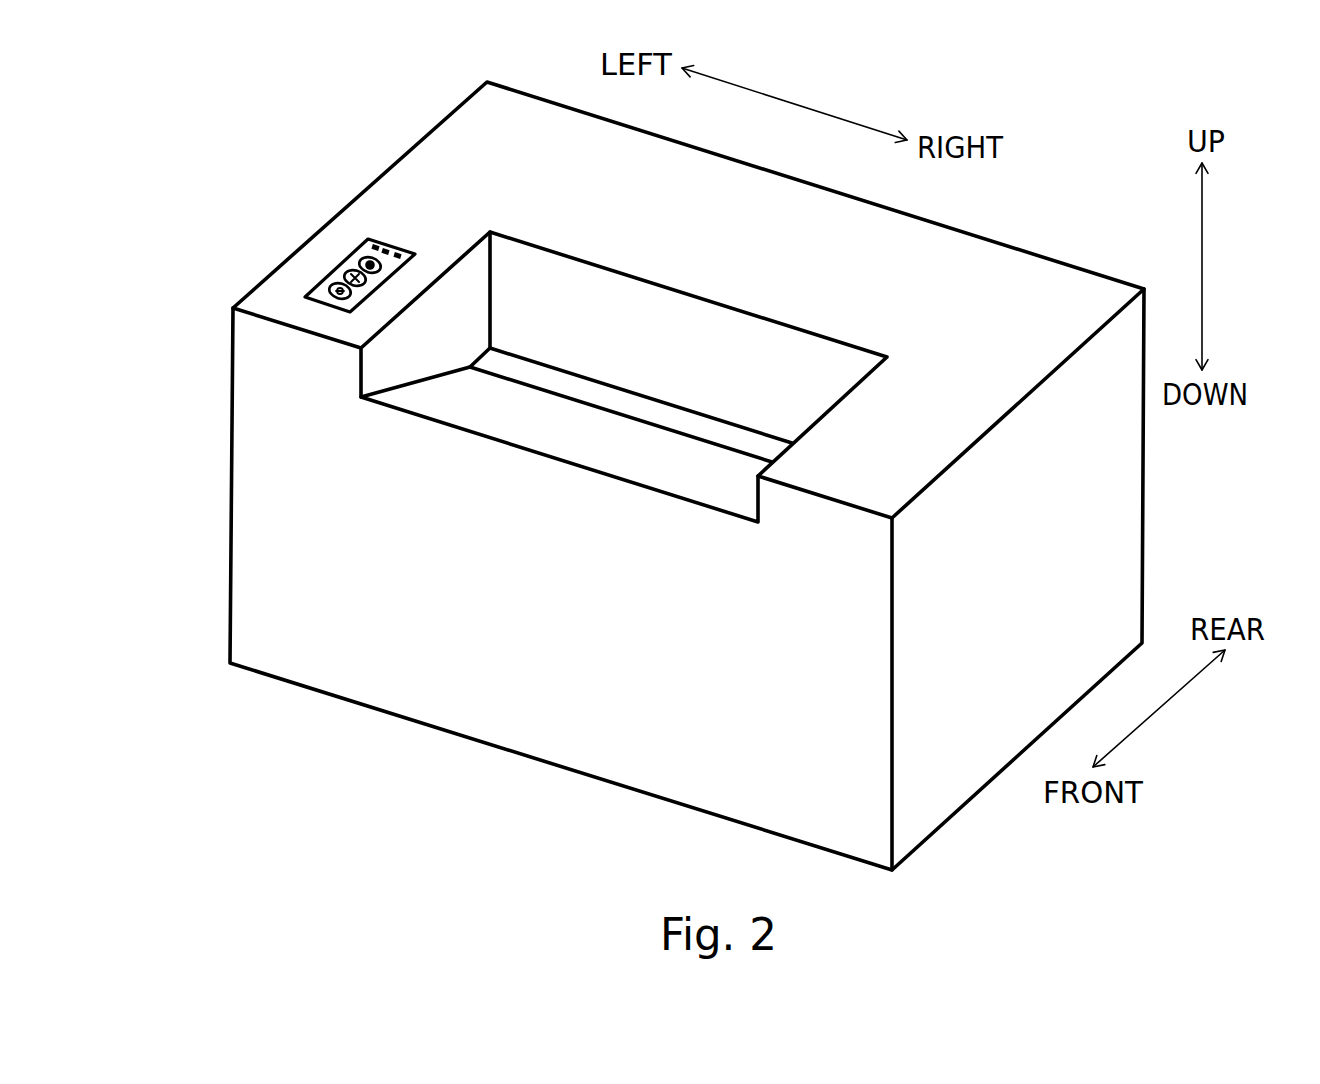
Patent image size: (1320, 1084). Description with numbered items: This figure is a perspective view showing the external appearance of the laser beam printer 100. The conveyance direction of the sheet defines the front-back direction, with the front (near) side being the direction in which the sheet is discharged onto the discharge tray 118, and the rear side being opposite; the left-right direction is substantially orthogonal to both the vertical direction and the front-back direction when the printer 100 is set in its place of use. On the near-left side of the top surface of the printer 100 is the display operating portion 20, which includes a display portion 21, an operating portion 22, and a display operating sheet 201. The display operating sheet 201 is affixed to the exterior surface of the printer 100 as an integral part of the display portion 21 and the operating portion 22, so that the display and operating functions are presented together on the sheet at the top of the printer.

The printer 100 is at (326, 117).
The discharge tray 118 is at (560, 420).
The display operating sheet 201 is at (332, 308).
The display operating portion 20 is at (293, 184).
The display portion 21 is at (383, 243).
The operating portion 22 is at (328, 298).